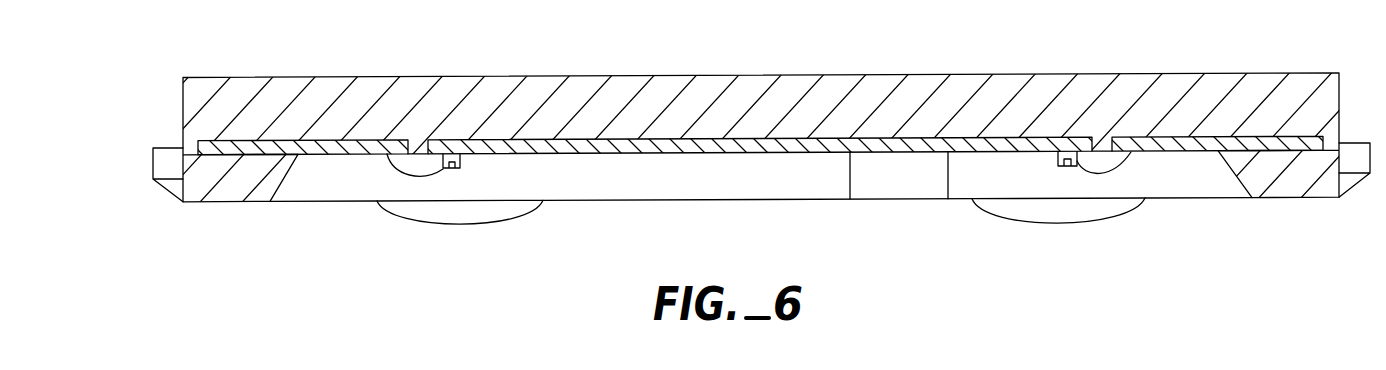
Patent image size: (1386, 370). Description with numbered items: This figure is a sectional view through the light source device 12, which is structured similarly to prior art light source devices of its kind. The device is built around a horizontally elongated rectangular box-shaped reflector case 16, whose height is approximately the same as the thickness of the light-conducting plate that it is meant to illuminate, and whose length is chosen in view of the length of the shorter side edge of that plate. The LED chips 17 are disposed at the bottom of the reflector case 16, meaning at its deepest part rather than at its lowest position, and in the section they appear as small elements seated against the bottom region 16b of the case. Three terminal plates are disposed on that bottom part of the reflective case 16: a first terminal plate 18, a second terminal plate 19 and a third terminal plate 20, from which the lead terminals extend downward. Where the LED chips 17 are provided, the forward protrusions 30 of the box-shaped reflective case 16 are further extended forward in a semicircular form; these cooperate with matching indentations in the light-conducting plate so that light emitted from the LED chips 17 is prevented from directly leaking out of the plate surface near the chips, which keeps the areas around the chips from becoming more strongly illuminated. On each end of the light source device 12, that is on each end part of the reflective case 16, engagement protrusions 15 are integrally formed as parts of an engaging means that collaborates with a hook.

The light source device 12 is at (724, 136).
The engagement protrusions 15 is at (162, 170).
The reflector case 16 is at (597, 75).
The bottom surface of housing 16b is at (637, 188).
The LED chips 17 is at (452, 168).
The first terminal plate 18 is at (300, 156).
The second terminal plate 19 is at (752, 154).
The third terminal plate 20 is at (1220, 151).
The forward protrusions 30 is at (430, 225).